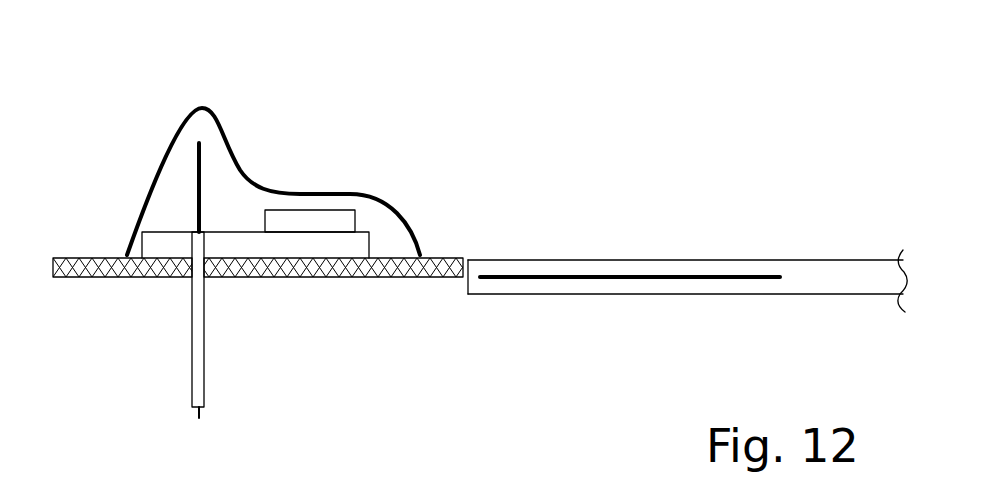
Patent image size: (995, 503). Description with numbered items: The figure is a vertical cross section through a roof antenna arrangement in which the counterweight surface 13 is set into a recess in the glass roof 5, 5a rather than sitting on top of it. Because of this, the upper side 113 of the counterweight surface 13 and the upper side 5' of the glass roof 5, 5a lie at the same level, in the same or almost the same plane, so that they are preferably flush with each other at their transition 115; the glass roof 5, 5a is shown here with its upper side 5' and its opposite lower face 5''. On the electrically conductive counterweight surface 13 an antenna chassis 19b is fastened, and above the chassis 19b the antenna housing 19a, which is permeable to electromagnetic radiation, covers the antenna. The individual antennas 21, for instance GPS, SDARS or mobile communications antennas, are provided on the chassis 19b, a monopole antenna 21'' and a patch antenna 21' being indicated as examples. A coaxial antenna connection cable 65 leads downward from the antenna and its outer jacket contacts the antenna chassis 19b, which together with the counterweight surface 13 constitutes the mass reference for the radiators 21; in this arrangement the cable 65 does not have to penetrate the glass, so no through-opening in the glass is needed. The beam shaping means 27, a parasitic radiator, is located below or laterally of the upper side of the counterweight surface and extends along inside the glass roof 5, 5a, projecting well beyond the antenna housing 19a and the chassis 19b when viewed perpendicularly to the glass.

The upper side of the counterweight surface 113 is at (102, 252).
The counterweight surface 13 is at (367, 270).
The antenna housing 19a is at (235, 163).
The antenna chassis 19b is at (267, 277).
The individual antennas 21 is at (304, 128).
The patch antenna 21' is at (357, 179).
The monopole antenna 21'' is at (217, 128).
The coaxial antenna connection cable 65 is at (178, 391).
The transition 115 is at (485, 231).
The glass roof 5 is at (687, 274).
The glass roof 5a is at (687, 281).
The upper side of the glass roof 5' is at (685, 227).
The lower side of carrier 5'' is at (685, 335).
The beam shaping means 27 is at (648, 277).